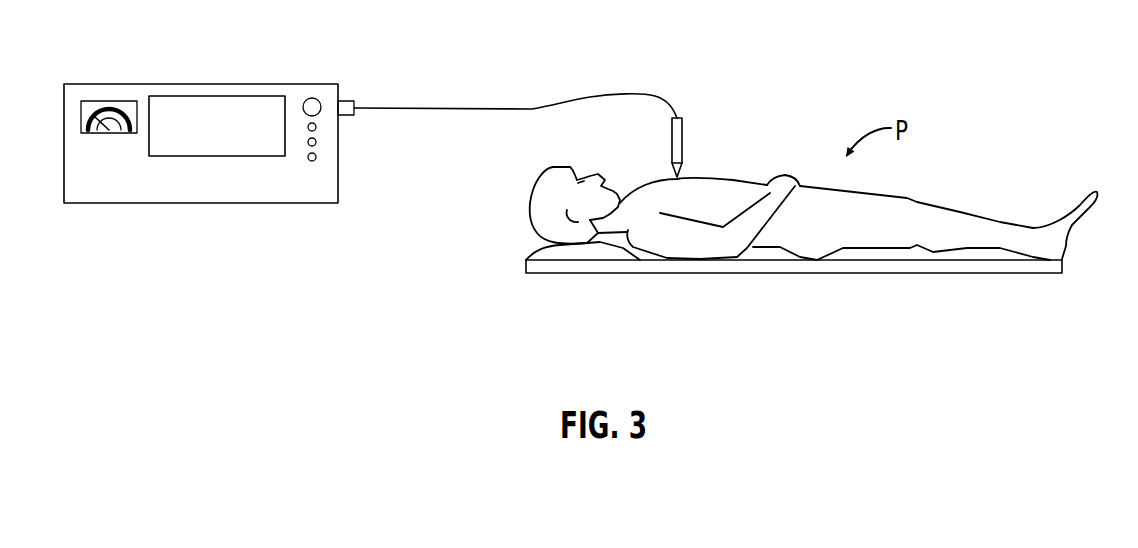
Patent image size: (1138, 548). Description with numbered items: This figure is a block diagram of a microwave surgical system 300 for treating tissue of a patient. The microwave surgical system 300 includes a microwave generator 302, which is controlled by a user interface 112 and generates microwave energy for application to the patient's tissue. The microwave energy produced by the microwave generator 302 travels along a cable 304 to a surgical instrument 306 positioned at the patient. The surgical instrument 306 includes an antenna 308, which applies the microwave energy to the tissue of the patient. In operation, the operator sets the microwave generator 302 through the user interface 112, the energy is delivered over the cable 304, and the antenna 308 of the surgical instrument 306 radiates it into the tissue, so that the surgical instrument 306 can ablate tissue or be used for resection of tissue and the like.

The microwave surgical system 300 is at (876, 52).
The microwave generator 302 is at (205, 84).
The user interface 112 is at (195, 157).
The cable 304 is at (578, 100).
The surgical instrument 306 is at (716, 142).
The antenna 308 is at (680, 173).